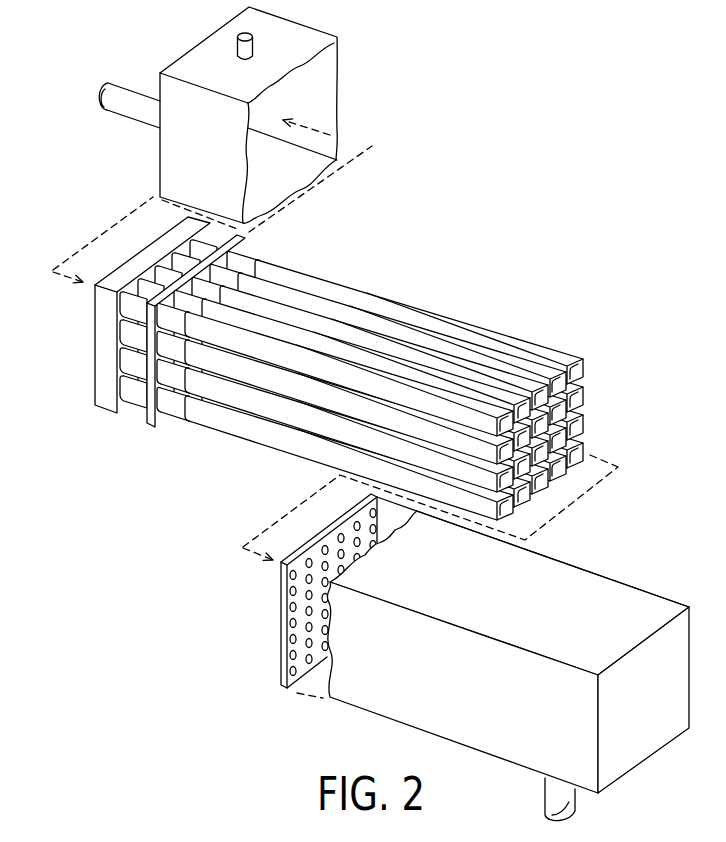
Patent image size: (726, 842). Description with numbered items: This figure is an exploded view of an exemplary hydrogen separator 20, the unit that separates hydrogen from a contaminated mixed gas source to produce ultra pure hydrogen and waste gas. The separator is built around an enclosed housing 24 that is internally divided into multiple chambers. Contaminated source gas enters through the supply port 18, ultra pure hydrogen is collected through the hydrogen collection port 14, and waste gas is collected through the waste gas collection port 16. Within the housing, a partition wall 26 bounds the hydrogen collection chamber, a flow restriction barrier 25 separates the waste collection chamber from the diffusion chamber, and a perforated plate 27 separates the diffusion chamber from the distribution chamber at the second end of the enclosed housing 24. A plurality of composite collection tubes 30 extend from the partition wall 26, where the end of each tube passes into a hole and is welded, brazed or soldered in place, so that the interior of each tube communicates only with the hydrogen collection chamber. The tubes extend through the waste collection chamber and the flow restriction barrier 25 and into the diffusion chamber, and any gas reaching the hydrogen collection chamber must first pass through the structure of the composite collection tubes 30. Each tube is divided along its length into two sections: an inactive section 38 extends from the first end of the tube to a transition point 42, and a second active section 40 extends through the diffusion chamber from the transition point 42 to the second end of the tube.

The hydrogen collection port 14 is at (137, 110).
The waste gas collection port 16 is at (252, 46).
The supply port 18 is at (557, 790).
The hydrogen separator 20 is at (542, 224).
The enclosed housing 24 is at (593, 592).
The flow restriction barrier 25 is at (253, 233).
The partition wall 26 is at (103, 367).
The perforated plate 27 is at (276, 670).
The composite collection tubes 30 is at (370, 377).
The inactive section 38 is at (185, 410).
The active section 40 is at (493, 483).
The transition point 42 is at (257, 259).